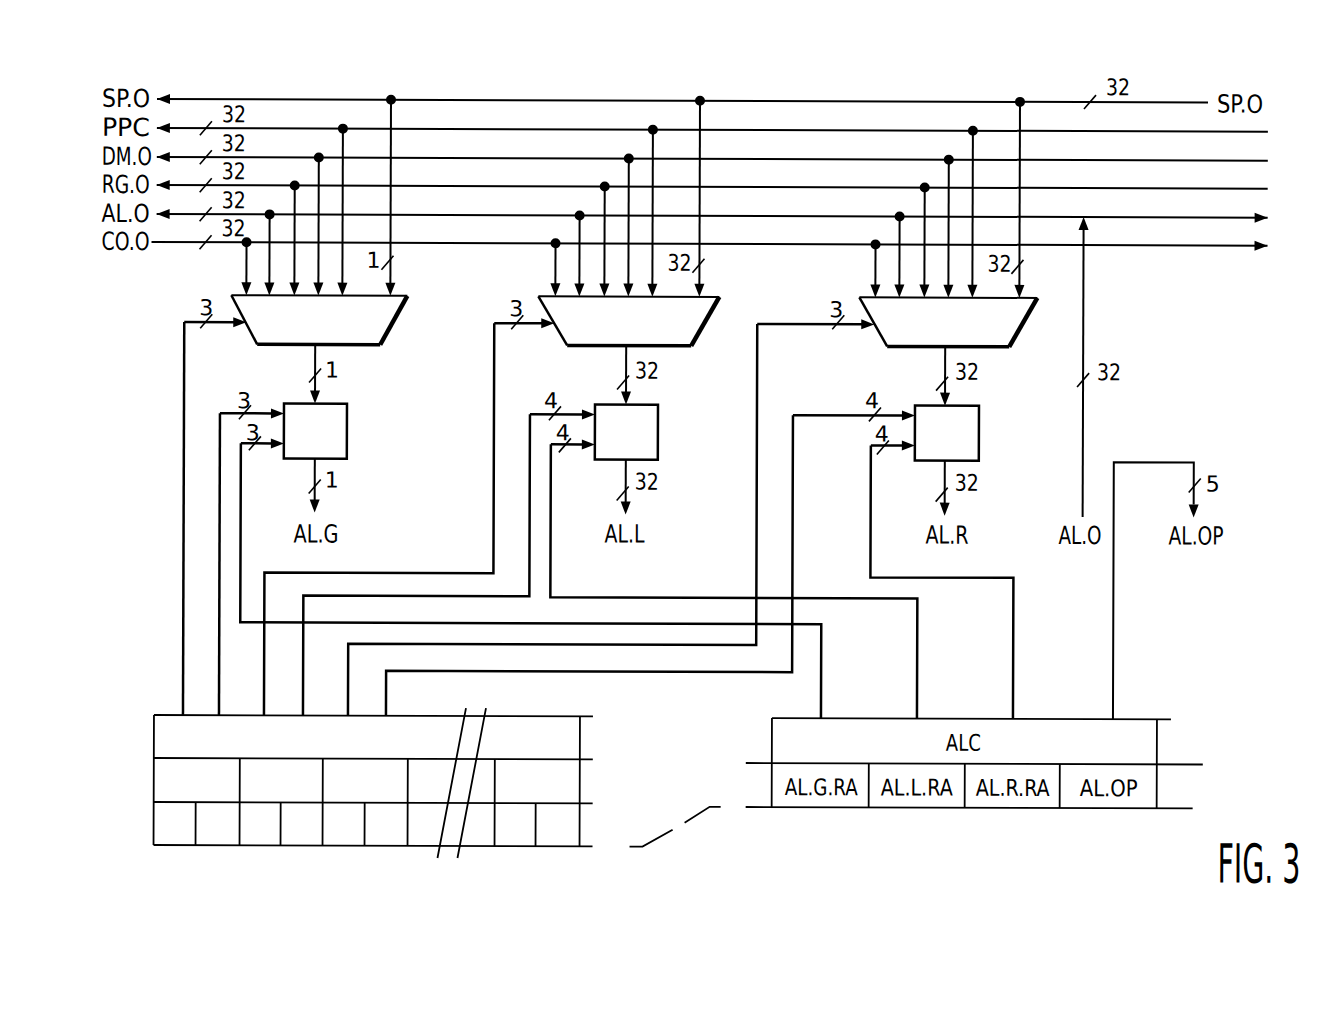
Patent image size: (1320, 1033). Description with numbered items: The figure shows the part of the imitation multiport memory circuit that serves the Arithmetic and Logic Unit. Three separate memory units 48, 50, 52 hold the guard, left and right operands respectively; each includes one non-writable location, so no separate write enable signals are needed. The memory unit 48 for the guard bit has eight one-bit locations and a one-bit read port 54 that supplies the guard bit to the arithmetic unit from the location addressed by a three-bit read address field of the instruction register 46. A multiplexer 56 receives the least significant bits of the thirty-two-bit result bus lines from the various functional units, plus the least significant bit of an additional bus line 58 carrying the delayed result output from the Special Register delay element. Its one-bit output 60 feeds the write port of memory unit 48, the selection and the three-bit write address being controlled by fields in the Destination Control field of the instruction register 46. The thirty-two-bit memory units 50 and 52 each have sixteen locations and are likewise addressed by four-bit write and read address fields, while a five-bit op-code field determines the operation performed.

The instruction register 46 is at (156, 766).
The memory unit 48 is at (348, 442).
The memory unit 50 is at (659, 446).
The memory unit 52 is at (981, 445).
The read port 54 is at (312, 468).
The multiplexer 56 is at (380, 315).
The bus line 58 is at (344, 98).
The output 60 is at (313, 357).